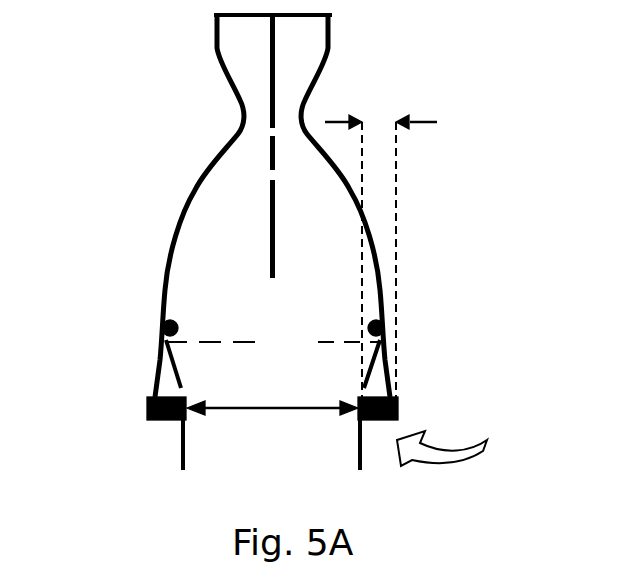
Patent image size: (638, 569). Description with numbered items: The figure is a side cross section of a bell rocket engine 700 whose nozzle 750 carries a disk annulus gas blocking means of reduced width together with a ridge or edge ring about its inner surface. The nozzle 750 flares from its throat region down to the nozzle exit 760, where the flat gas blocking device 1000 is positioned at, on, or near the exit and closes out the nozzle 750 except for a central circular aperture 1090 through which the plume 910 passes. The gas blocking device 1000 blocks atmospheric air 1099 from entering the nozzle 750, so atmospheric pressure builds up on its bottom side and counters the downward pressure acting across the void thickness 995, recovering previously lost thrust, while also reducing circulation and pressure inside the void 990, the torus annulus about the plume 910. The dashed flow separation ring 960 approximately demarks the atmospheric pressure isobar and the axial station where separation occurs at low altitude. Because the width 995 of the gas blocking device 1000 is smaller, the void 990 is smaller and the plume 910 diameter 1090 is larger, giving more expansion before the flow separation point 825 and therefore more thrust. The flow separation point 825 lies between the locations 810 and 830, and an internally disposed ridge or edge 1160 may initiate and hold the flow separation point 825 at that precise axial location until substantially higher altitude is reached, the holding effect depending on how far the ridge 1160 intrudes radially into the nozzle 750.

The liquid rocket engine 700 is at (215, 27).
The nozzle 750 is at (200, 168).
The nozzle exit 760 is at (168, 422).
The flow separation point 810 is at (374, 245).
The flow separation point 825 is at (395, 336).
The flow separation point 830 is at (400, 410).
The plume 910 is at (271, 202).
The flow separation ring 960 is at (349, 340).
The void 990 is at (377, 382).
The width 995 is at (381, 104).
The gas blocking device 1000 is at (147, 408).
The central circular aperture 1090 is at (285, 415).
The atmospheric air 1099 is at (457, 442).
The ridge or edge 1160 is at (165, 328).